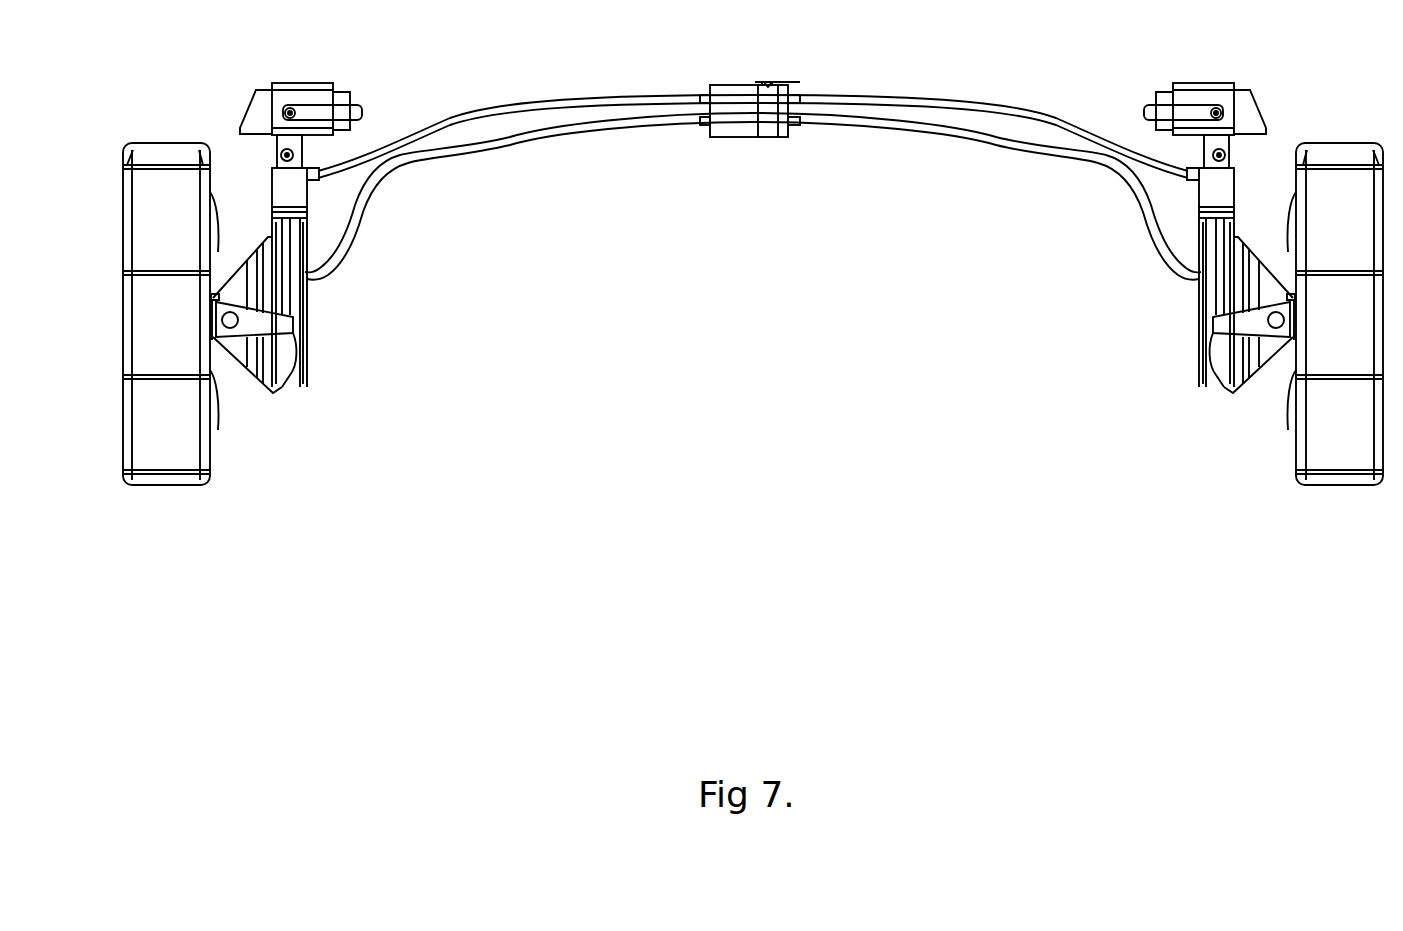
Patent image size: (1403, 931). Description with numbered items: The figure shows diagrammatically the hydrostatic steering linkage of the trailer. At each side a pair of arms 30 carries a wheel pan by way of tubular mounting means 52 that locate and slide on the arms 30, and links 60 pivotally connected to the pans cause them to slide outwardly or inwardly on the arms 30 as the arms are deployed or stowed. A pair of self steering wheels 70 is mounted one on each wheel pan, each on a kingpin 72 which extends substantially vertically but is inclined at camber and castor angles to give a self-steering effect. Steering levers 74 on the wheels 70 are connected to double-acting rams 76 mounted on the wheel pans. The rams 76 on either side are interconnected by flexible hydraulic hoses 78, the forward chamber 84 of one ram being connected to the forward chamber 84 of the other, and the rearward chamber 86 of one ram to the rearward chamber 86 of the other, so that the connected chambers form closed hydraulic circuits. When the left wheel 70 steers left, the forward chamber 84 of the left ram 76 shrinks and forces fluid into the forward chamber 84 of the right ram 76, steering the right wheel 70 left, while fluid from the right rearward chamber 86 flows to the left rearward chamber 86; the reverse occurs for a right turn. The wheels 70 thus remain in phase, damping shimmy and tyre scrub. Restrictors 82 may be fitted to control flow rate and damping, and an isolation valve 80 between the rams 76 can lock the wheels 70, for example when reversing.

The arms 30 is at (257, 113).
The tubular mounting means 52 is at (302, 83).
The links 60 is at (347, 112).
The self steering wheels 70 is at (152, 163).
The kingpins 72 is at (227, 328).
The steering levers 74 is at (288, 332).
The double-acting rams 76 is at (298, 275).
The flexible hydraulic hoses 78 is at (405, 147).
The isolation valve 80 is at (768, 79).
The restrictors 82 is at (737, 124).
The forward chamber 84 is at (293, 192).
The rearward chamber 86 is at (297, 243).